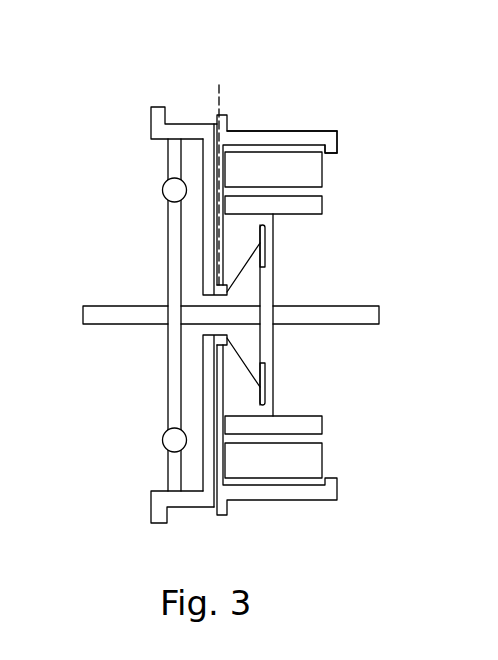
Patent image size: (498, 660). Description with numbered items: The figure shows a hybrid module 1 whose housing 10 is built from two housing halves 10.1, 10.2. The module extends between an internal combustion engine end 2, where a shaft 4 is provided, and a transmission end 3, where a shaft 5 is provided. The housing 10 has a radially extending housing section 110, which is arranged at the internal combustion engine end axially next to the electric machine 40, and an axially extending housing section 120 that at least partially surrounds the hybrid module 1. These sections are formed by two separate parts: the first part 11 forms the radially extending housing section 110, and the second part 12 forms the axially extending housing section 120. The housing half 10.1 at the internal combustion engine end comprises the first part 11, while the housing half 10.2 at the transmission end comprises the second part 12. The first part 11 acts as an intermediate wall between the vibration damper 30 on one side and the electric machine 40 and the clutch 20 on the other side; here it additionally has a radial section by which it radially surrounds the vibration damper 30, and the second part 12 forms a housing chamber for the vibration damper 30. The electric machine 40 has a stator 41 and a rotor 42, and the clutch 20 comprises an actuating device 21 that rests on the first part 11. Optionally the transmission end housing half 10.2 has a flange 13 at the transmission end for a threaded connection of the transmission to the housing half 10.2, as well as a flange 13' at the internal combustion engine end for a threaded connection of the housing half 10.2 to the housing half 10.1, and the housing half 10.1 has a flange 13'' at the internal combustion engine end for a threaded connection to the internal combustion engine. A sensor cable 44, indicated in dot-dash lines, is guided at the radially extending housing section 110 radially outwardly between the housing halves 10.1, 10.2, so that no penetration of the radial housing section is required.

The hybrid module 1 is at (100, 128).
The internal combustion engine end 2 is at (105, 455).
The transmission end 3 is at (352, 387).
The shaft 4 is at (103, 306).
The shaft 5 is at (360, 325).
The housing 10 is at (138, 126).
The housing half 10.1 is at (195, 124).
The housing half 10.2 is at (340, 141).
The first part 11 is at (203, 237).
The second part 12 is at (287, 131).
The flange 13 is at (367, 133).
The flange 13' is at (277, 451).
The flange 13'' is at (143, 524).
The clutch 20 is at (290, 400).
The actuating device 21 is at (222, 346).
The vibration damper 30 is at (166, 180).
The electric machine 40 is at (403, 190).
The stator 41 is at (322, 177).
The rotor 42 is at (322, 203).
The sensor cable 44 is at (215, 86).
The radially extending housing section 110 is at (200, 373).
The axially extending housing section 120 is at (272, 88).